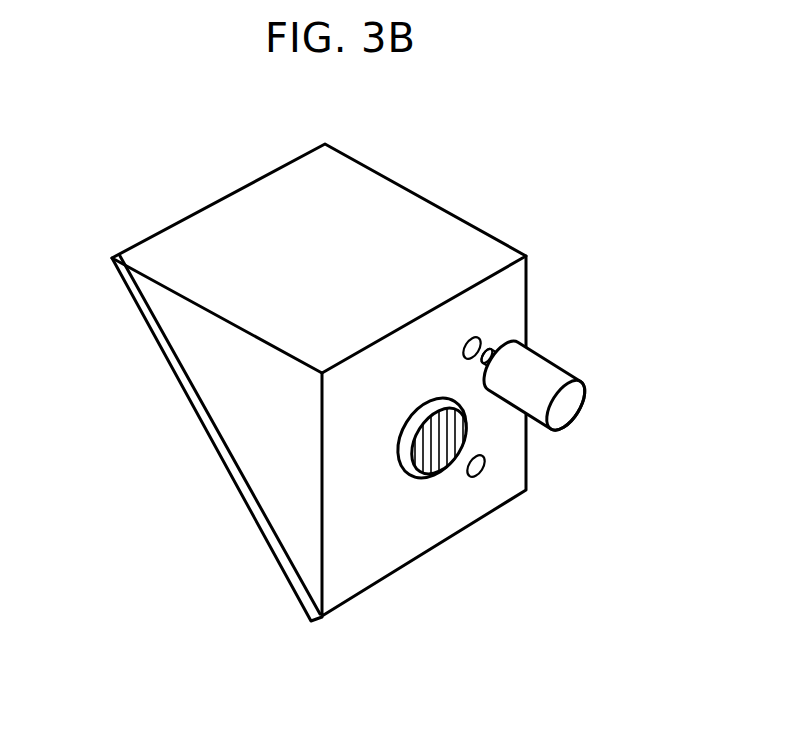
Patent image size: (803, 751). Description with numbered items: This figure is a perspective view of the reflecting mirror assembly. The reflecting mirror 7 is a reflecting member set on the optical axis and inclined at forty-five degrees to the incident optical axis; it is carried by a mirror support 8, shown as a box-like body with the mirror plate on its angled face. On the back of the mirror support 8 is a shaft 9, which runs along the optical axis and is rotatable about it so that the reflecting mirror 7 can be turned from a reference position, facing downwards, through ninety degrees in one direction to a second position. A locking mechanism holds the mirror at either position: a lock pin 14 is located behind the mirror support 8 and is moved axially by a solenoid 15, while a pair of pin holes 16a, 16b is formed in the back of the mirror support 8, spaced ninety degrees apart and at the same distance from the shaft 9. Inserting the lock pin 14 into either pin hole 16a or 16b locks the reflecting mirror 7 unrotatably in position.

The reflecting mirror 7 is at (192, 397).
The mirror support 8 is at (425, 208).
The shaft 9 is at (432, 470).
The lock pin 14 is at (495, 350).
The solenoid 15 is at (578, 400).
The pin hole 16a is at (483, 467).
The pin hole 16b is at (483, 343).